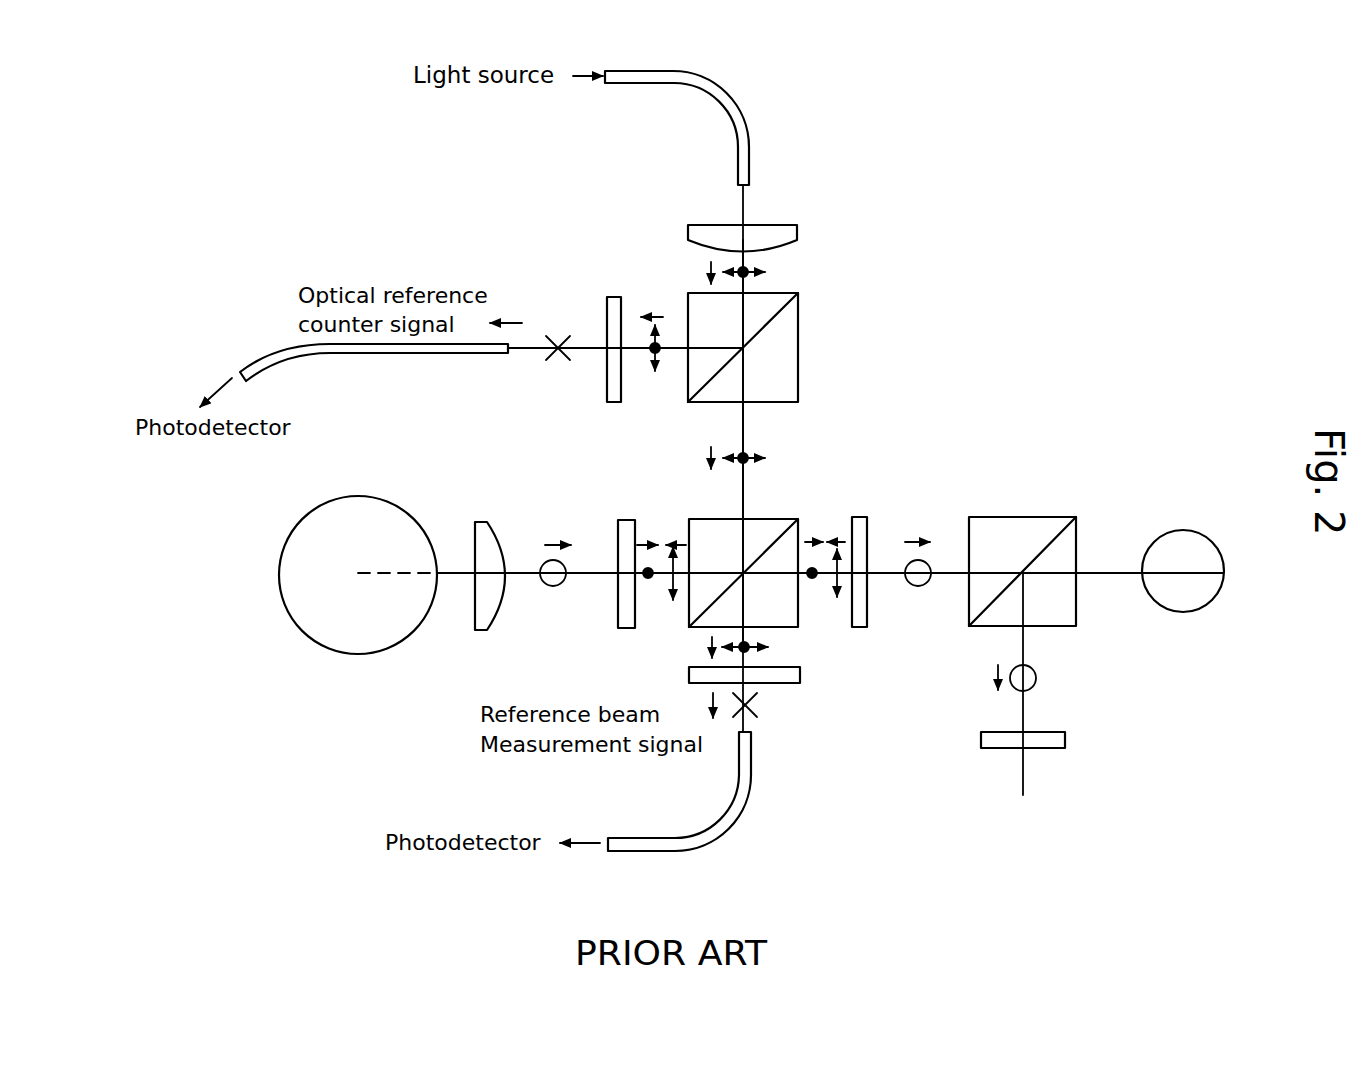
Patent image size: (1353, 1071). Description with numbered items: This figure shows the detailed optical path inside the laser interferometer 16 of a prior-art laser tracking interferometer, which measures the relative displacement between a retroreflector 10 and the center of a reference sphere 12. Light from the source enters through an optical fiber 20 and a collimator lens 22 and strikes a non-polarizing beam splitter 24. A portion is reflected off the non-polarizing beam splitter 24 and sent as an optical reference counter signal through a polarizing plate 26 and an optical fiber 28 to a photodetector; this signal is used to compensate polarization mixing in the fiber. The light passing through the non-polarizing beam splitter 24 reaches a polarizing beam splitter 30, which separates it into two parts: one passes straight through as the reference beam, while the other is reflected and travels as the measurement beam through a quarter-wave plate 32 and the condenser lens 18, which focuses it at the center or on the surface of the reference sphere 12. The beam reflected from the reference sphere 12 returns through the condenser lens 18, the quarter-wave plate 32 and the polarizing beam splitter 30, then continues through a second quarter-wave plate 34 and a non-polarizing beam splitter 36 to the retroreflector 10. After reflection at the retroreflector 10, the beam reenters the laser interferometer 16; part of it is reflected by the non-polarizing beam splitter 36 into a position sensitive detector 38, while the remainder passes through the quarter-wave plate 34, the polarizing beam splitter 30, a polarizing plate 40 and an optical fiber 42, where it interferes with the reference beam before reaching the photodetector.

The retroreflector 10 is at (1146, 586).
The reference sphere 12 is at (300, 515).
The laser interferometer 16 is at (967, 198).
The condenser lens 18 is at (483, 521).
The optical fiber 20 is at (741, 117).
The collimator lens 22 is at (797, 232).
The non-polarizing beam splitter 24 is at (798, 327).
The polarizing plate 26 is at (614, 297).
The optical fiber 28 is at (265, 356).
The polarizing beam splitter 30 is at (775, 519).
The quarter-wave plate 32 is at (626, 520).
The quarter-wave plate 34 is at (868, 615).
The non-polarizing beam splitter 36 is at (968, 518).
The position sensitive detector 38 is at (1065, 738).
The polarizing plate 40 is at (800, 672).
The optical fiber 42 is at (752, 785).